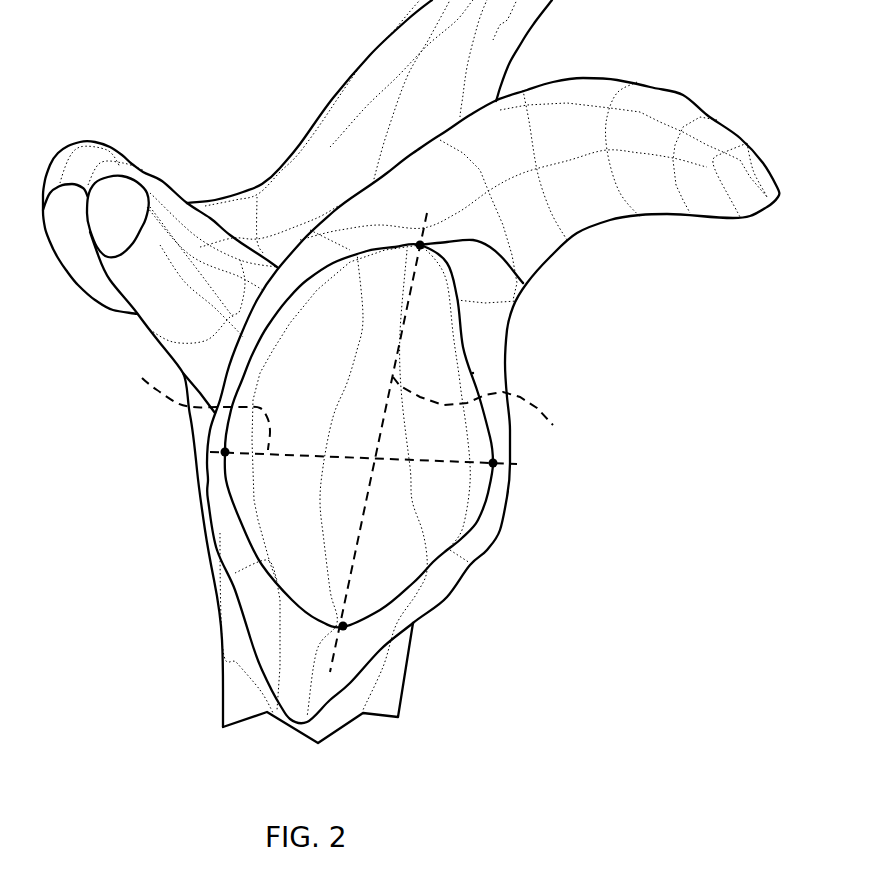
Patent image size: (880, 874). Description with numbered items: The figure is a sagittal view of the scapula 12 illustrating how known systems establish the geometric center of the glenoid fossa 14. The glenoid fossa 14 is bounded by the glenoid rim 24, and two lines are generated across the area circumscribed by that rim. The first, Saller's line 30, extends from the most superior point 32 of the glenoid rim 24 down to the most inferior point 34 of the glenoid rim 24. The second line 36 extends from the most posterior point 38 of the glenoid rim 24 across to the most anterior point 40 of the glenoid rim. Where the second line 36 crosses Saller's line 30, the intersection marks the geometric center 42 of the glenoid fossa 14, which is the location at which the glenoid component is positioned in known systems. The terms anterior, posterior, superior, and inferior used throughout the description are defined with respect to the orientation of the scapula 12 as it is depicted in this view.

The scapula 12 is at (216, 99).
The glenoid fossa 14 is at (338, 333).
The glenoid rim 24 is at (473, 373).
The Saller's line 30 is at (487, 412).
The most superior point 32 is at (523, 283).
The most inferior point 34 is at (345, 628).
The second line 36 is at (191, 403).
The most posterior point 38 is at (223, 452).
The most anterior point 40 is at (497, 463).
The geometric center 42 is at (380, 457).